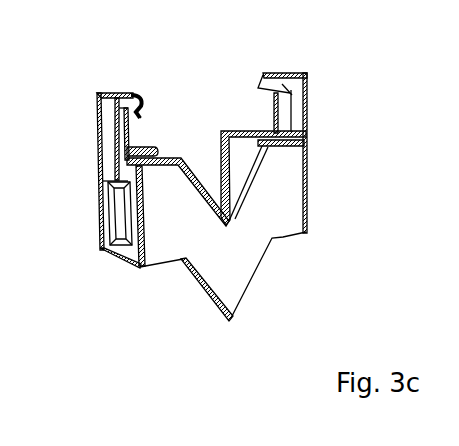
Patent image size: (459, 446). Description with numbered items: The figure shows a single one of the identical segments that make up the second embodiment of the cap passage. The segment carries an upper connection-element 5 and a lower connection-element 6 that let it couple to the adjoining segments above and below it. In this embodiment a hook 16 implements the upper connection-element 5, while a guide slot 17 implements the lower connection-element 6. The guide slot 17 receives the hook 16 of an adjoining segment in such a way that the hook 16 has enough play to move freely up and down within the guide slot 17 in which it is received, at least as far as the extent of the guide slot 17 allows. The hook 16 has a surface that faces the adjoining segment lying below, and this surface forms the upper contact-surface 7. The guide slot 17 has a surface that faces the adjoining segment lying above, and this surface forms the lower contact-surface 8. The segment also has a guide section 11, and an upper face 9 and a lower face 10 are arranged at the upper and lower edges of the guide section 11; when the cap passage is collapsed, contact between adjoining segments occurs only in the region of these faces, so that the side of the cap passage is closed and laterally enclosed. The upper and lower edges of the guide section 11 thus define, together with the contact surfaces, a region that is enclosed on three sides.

The upper connection-element 5 is at (250, 68).
The lower connection-element 6 is at (129, 271).
The upper contact-surface 7 is at (139, 118).
The lower contact-surface 8 is at (111, 245).
The upper face 9 is at (113, 89).
The lower face 10 is at (118, 264).
The guide section 11 is at (232, 262).
The hook 16 is at (95, 126).
The guide slot 17 is at (118, 212).